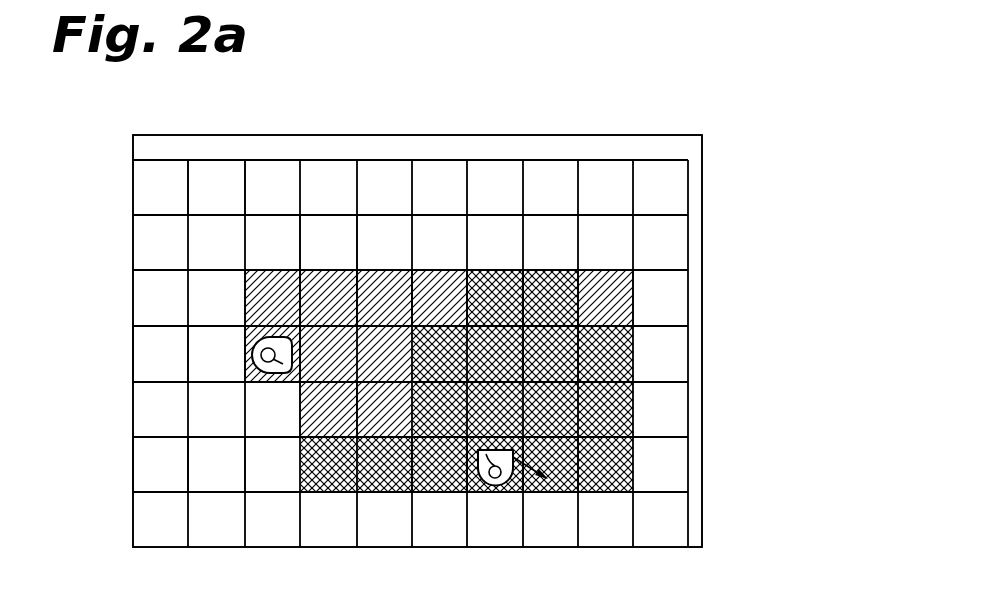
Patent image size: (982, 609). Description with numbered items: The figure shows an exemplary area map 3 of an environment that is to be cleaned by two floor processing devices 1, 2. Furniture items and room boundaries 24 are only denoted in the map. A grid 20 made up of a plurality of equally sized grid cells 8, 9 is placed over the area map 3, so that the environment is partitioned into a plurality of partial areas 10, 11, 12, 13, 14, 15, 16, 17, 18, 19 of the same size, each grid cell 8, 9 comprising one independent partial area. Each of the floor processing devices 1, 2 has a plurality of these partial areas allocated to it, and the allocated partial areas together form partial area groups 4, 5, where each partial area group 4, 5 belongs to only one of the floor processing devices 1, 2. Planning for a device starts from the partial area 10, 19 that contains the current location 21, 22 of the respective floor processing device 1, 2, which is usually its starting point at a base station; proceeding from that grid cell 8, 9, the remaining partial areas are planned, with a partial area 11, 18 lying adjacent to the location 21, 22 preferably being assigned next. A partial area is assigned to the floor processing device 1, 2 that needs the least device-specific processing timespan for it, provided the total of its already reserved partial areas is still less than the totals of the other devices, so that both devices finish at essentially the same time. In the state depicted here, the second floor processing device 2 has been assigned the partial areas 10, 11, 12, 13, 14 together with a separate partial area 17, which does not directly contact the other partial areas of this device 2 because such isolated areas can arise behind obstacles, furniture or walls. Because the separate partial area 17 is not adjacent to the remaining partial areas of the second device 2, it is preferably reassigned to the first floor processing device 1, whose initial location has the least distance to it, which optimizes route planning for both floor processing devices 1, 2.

The floor processing device 1 is at (565, 522).
The floor processing device 2 is at (169, 382).
The area map 3 is at (488, 341).
The partial area group 4 is at (198, 439).
The partial area group 5 is at (662, 352).
The grid cell 8 is at (113, 495).
The grid cell 9 is at (202, 522).
The partial area 10 is at (167, 304).
The partial area 11 is at (195, 245).
The partial area 12 is at (167, 216).
The partial area 13 is at (369, 196).
The partial area 14 is at (439, 196).
The partial area 15 is at (525, 196).
The partial area 16 is at (605, 196).
The partial area 17 is at (673, 196).
The partial area 18 is at (414, 522).
The partial area 19 is at (498, 528).
The grid 20 is at (111, 354).
The location 21 is at (504, 522).
The location 22 is at (163, 330).
The furniture items and room boundaries 24 is at (272, 168).